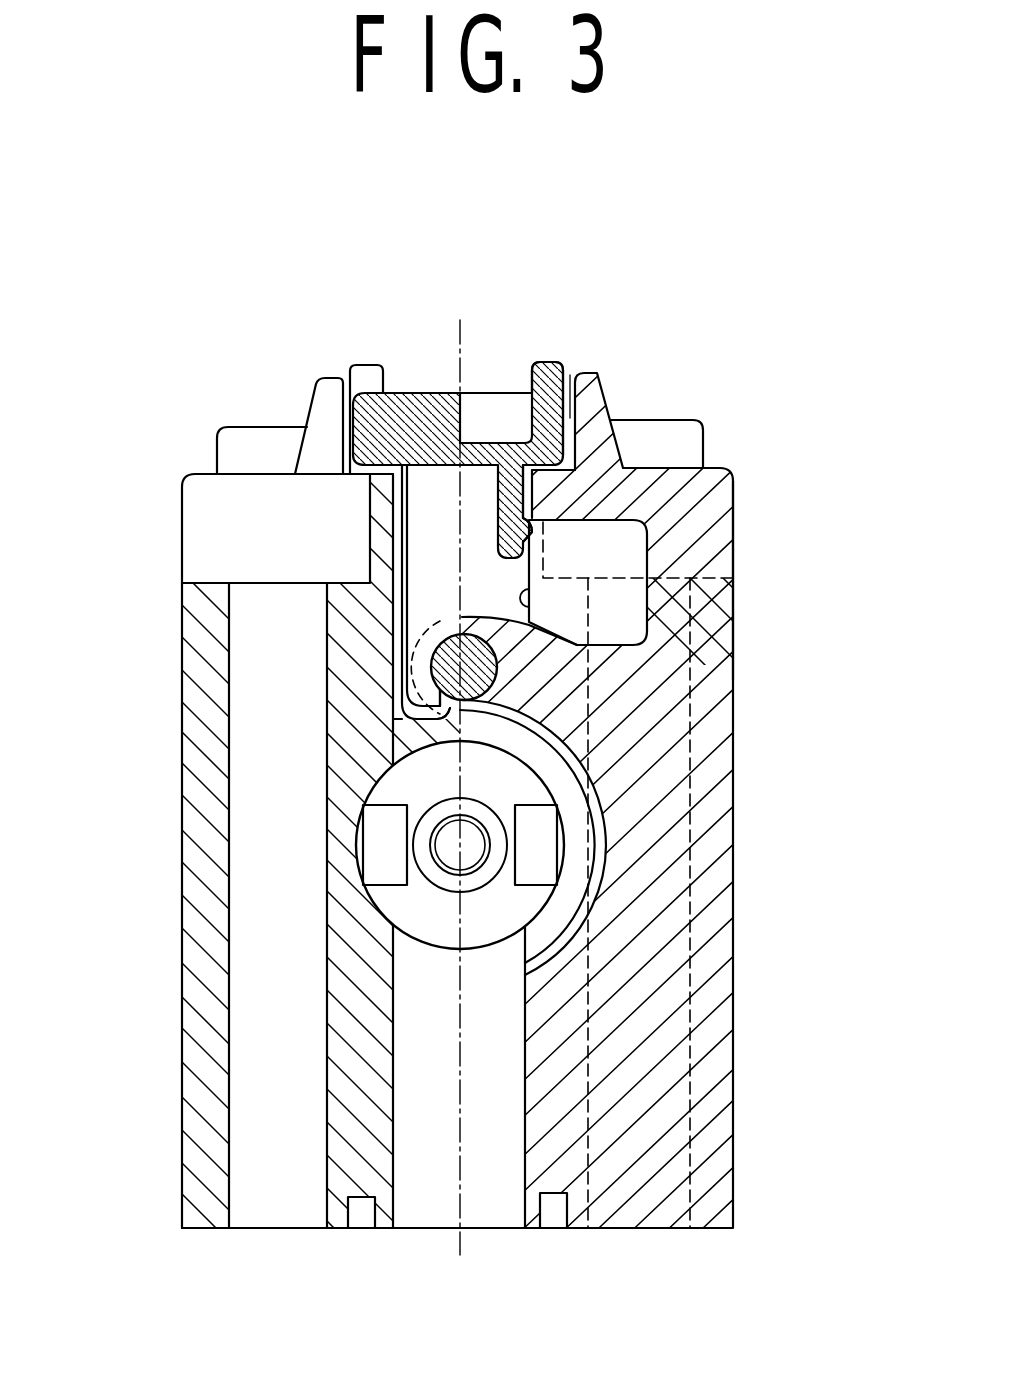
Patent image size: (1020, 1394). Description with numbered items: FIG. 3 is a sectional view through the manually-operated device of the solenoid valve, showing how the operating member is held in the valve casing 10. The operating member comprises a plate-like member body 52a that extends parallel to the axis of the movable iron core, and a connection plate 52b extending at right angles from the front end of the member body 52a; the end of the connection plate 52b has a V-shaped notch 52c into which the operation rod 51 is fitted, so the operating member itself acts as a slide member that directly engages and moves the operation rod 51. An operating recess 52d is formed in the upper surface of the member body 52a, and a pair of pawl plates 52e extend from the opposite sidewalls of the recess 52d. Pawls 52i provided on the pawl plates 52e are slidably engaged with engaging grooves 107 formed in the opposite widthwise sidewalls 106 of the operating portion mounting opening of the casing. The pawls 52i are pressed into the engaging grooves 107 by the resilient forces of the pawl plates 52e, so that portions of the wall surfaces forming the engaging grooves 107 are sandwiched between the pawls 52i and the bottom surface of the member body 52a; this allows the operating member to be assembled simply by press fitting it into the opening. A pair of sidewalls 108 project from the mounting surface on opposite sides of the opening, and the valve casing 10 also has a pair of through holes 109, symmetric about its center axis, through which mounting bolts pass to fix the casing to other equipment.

The valve casing 10 is at (705, 887).
The operation rod 51 is at (433, 657).
The member body 52a is at (557, 364).
The connection plate 52b is at (427, 572).
The V-shaped notch 52c is at (445, 740).
The operating recess 52d is at (513, 432).
The pawl plates 52e is at (530, 488).
The pawls 52i is at (528, 543).
The sidewalls 106 is at (527, 592).
The engaging grooves 107 is at (598, 535).
The sidewalls 108 is at (596, 400).
The through holes 109 is at (268, 862).